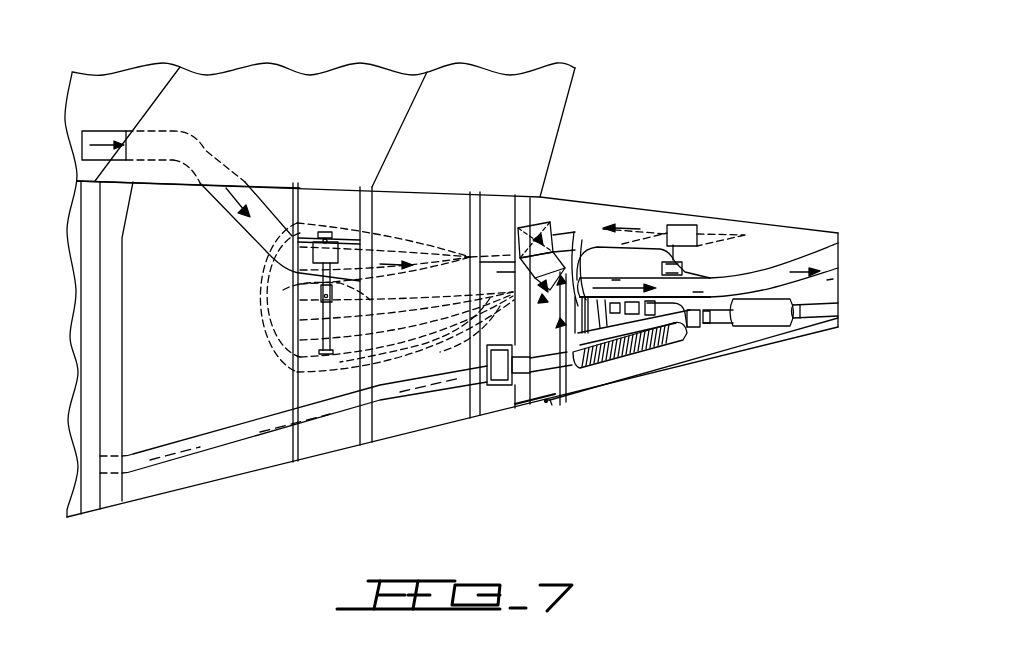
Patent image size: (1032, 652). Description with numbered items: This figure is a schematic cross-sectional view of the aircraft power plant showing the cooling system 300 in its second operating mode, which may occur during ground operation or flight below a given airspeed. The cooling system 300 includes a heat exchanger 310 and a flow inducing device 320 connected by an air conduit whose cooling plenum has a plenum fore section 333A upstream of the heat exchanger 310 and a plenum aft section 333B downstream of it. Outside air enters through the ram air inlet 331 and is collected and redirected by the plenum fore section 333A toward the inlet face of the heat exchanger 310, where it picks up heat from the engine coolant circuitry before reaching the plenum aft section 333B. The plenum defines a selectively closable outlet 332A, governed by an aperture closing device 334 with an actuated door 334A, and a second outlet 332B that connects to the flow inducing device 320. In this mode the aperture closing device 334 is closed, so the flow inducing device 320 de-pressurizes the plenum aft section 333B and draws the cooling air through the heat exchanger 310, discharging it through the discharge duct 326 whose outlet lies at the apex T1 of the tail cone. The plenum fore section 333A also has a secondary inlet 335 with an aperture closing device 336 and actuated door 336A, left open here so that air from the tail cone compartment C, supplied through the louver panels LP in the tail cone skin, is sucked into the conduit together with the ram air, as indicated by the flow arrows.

The cooling system 300 is at (312, 166).
The heat exchanger 310 is at (508, 293).
The flow inducing device 320 is at (576, 232).
The discharge duct 326 is at (750, 296).
The ram air inlet 331 is at (68, 137).
The selectively closable outlet 332A is at (550, 412).
The second outlet 332B is at (570, 348).
The plenum fore section 333A is at (506, 248).
The plenum aft section 333B is at (522, 384).
The aperture closing device 334 is at (528, 424).
The actuated door 334A is at (546, 425).
The secondary inlet 335 is at (537, 222).
The aperture closing device 336 is at (572, 250).
The actuated door 336A is at (538, 234).
The louver panels LP is at (694, 227).
The tail cone compartment C is at (796, 216).
The apex of the tail cone T1 is at (862, 250).